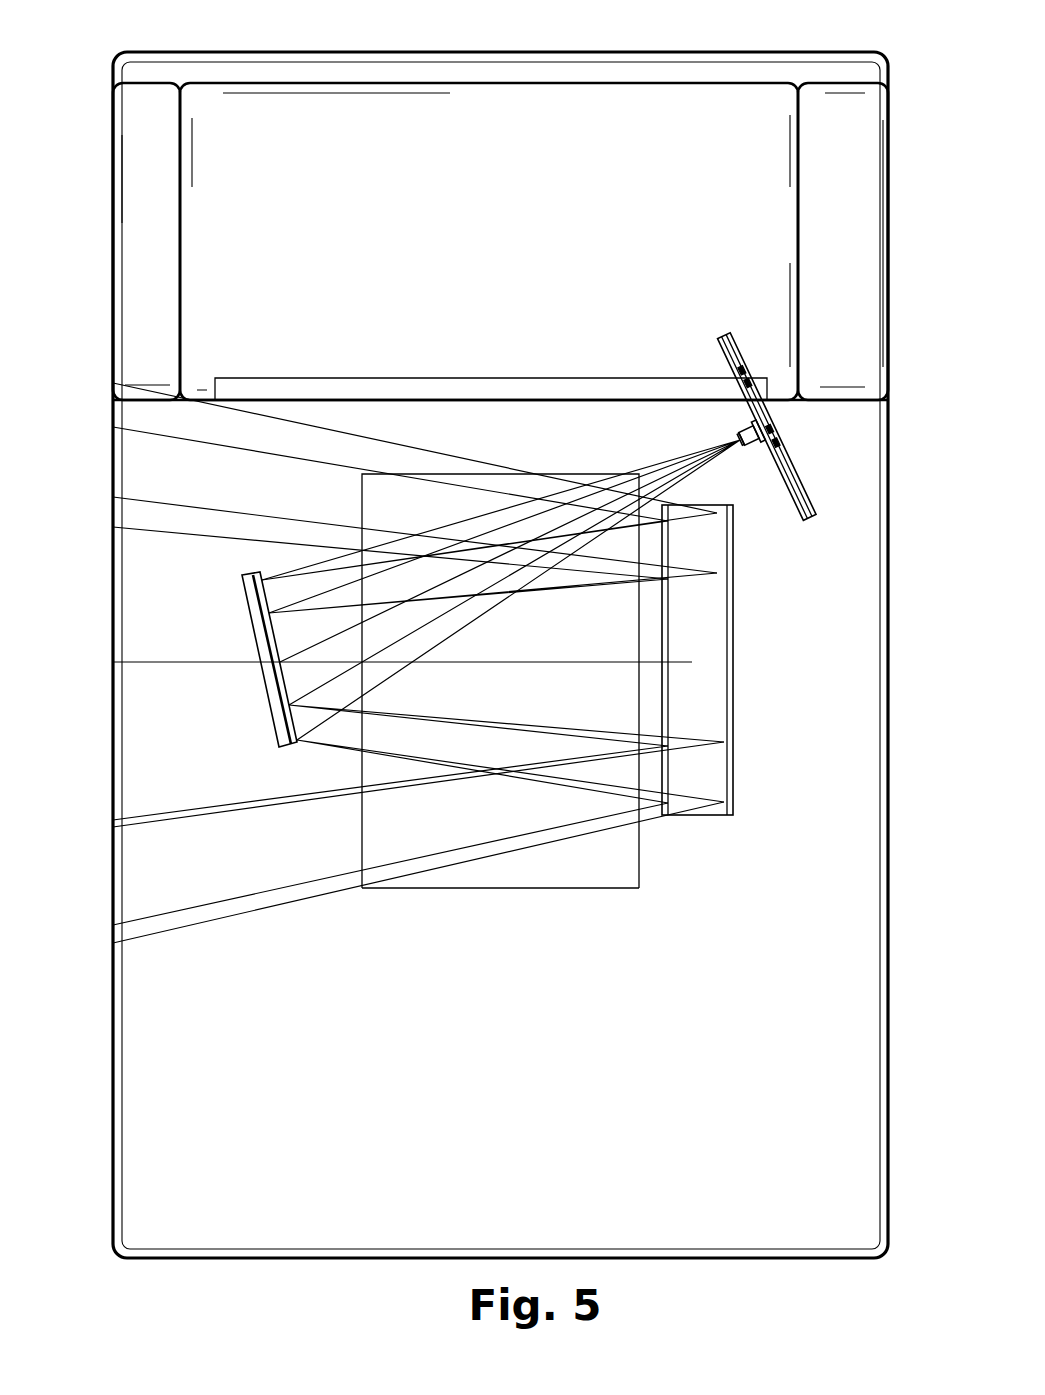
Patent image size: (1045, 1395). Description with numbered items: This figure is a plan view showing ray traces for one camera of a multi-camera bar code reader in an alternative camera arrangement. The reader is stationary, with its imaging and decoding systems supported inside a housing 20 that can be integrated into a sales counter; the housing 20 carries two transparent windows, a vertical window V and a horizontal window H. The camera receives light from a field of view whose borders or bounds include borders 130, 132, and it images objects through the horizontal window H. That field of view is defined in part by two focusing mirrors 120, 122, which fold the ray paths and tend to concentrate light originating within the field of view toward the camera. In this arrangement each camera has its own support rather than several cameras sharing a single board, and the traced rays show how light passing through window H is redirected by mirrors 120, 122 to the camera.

The housing 20 is at (413, 150).
The vertical transparent window V is at (426, 388).
The horizontal transparent window H is at (582, 853).
The focusing mirror 120 is at (692, 683).
The focusing mirror 122 is at (268, 692).
The field of view border 130 is at (478, 462).
The field of view border 132 is at (474, 862).